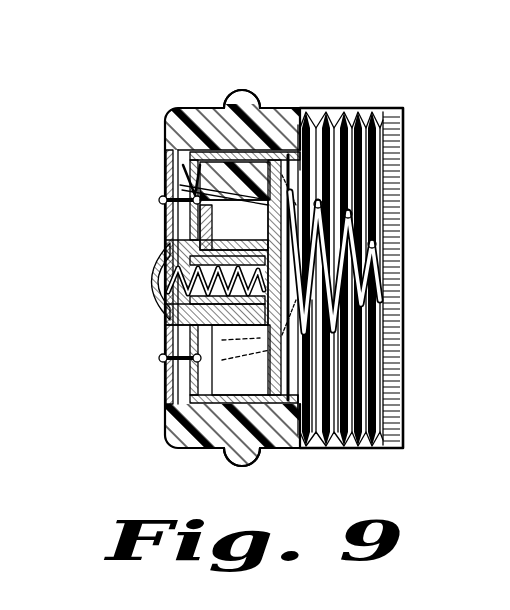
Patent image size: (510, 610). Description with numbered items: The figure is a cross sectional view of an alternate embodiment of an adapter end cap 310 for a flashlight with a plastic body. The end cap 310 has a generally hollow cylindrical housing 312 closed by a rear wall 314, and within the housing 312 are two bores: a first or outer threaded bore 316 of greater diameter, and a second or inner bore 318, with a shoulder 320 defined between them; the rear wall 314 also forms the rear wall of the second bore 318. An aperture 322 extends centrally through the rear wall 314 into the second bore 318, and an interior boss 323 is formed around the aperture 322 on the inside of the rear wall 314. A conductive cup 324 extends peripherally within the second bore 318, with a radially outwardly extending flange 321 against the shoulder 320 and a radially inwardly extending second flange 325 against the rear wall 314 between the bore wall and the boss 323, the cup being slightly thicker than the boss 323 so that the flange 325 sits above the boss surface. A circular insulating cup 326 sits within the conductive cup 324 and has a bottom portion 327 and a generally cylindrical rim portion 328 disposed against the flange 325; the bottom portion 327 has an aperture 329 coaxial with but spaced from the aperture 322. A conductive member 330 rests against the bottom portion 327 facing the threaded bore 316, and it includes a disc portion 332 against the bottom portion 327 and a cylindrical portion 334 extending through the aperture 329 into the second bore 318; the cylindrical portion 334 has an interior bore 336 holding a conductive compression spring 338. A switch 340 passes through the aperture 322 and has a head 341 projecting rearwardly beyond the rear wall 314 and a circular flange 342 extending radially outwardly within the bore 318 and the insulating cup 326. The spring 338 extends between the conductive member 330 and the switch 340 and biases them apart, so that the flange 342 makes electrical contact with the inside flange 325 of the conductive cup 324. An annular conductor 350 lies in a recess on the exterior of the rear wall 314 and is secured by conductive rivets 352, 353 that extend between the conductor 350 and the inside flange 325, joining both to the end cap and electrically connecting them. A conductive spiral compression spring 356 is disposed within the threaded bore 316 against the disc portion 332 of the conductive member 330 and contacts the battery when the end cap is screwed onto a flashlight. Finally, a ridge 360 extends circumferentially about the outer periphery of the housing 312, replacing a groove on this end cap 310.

The end cap 310 is at (387, 107).
The cylindrical housing 312 is at (298, 438).
The rear wall 314 is at (190, 428).
The threaded bore 316 is at (380, 409).
The second bore 318 is at (192, 116).
The shoulder 320 is at (296, 118).
The radially outwardly extending flange 321 is at (314, 112).
The aperture 322 is at (165, 238).
The interior boss 323 is at (262, 221).
The conductive cup 324 is at (212, 430).
The second flange 325 is at (190, 177).
The insulating cup 326 is at (274, 156).
The bottom portion 327 is at (266, 343).
The rim portion 328 is at (239, 452).
The aperture 329 is at (348, 264).
The conductive member 330 is at (306, 206).
The disc portion 332 is at (320, 238).
The cylindrical portion 334 is at (145, 260).
The interior bore 336 is at (160, 311).
The conductive compression spring 338 is at (168, 287).
The switch 340 is at (170, 279).
The head 341 is at (160, 320).
The circular flange 342 is at (205, 239).
The annular conductor 350 is at (166, 344).
The rivet 352 is at (160, 361).
The rivet 353 is at (160, 199).
The spiral compression spring 356 is at (370, 278).
The ridge 360 is at (240, 97).